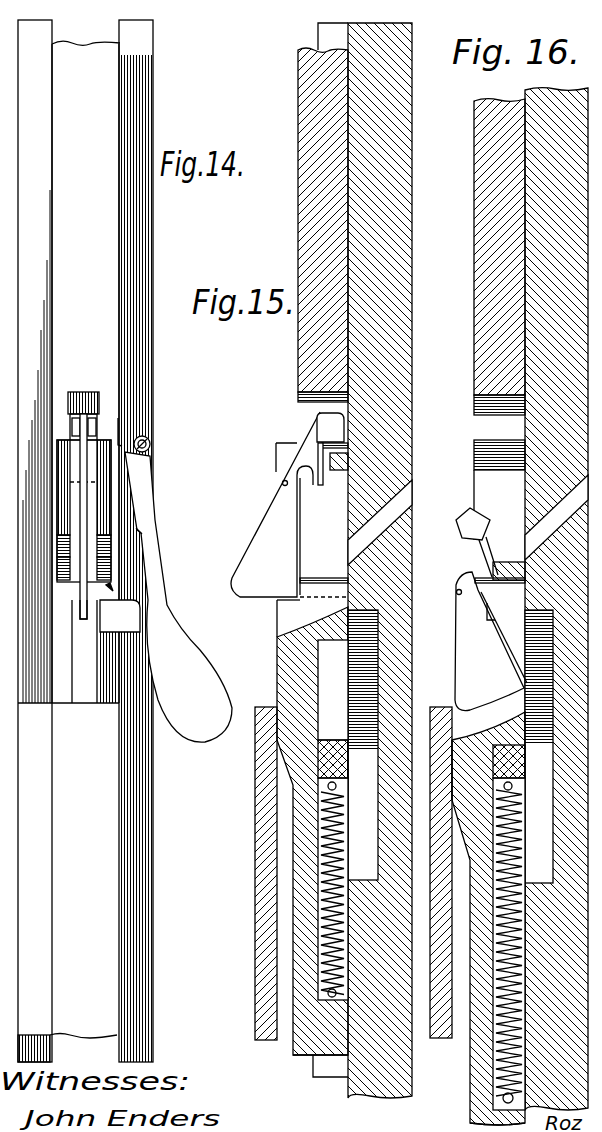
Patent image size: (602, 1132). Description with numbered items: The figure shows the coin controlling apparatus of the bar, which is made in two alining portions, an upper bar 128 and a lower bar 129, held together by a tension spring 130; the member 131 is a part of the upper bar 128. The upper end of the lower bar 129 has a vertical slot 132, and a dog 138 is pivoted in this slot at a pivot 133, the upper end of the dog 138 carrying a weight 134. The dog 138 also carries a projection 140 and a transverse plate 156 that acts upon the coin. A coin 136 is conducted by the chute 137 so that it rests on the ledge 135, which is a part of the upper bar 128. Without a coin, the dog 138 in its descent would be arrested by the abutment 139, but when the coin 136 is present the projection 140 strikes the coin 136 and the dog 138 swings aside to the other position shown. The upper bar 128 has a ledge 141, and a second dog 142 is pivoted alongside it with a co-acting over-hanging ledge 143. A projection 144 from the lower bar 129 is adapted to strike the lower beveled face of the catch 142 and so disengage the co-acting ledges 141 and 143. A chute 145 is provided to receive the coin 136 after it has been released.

In FIG. 14, the upper bar portion 128 is at (86, 372).
In FIG. 15, the upper bar portion 128 is at (302, 118).
In FIG. 16, the upper bar portion 128 is at (487, 185).
In FIG. 14, the lower bar portion 129 is at (67, 1048).
In FIG. 15, the lower bar portion 129 is at (300, 1048).
In FIG. 16, the lower bar portion 129 is at (482, 1122).
In FIG. 15, the tension spring 130 is at (295, 900).
In FIG. 16, the tension spring 130 is at (495, 1050).
In FIG. 15, the member of upper bar 131 is at (318, 755).
In FIG. 16, the member of upper bar 131 is at (518, 775).
In FIG. 14, the vertical slot 132 is at (84, 612).
In FIG. 15, the vertical slot 132 is at (282, 624).
In FIG. 16, the vertical slot 132 is at (474, 759).
In FIG. 15, the pivot 133 is at (283, 482).
In FIG. 16, the pivot 133 is at (456, 594).
In FIG. 14, the weight 134 is at (92, 420).
In FIG. 15, the weight 134 is at (320, 424).
In FIG. 16, the weight 134 is at (468, 512).
In FIG. 14, the ledge 135 is at (113, 591).
In FIG. 15, the ledge 135 is at (312, 600).
In FIG. 16, the ledge 135 is at (505, 583).
In FIG. 14, the coin 136 is at (108, 570).
In FIG. 15, the coin 136 is at (312, 576).
In FIG. 16, the coin 136 is at (503, 562).
In FIG. 14, the chute 137 is at (108, 547).
In FIG. 15, the chute 137 is at (390, 505).
In FIG. 16, the chute 137 is at (556, 517).
In FIG. 14, the dog 138 is at (83, 500).
In FIG. 15, the dog 138 is at (275, 504).
In FIG. 16, the dog 138 is at (489, 641).
In FIG. 14, the abutment 139 is at (80, 704).
In FIG. 15, the abutment 139 is at (258, 705).
In FIG. 16, the abutment 139 is at (438, 707).
In FIG. 15, the projection 140 is at (320, 487).
In FIG. 16, the projection 140 is at (484, 550).
In FIG. 14, the ledge 141 is at (122, 433).
In FIG. 14, the dog 142 is at (178, 589).
In FIG. 14, the over-hanging ledge 143 is at (140, 533).
In FIG. 14, the projection 144 is at (122, 617).
In FIG. 15, the chute 145 is at (365, 745).
In FIG. 16, the chute 145 is at (542, 746).
In FIG. 15, the transverse plate 156 is at (297, 533).
In FIG. 16, the transverse plate 156 is at (496, 640).